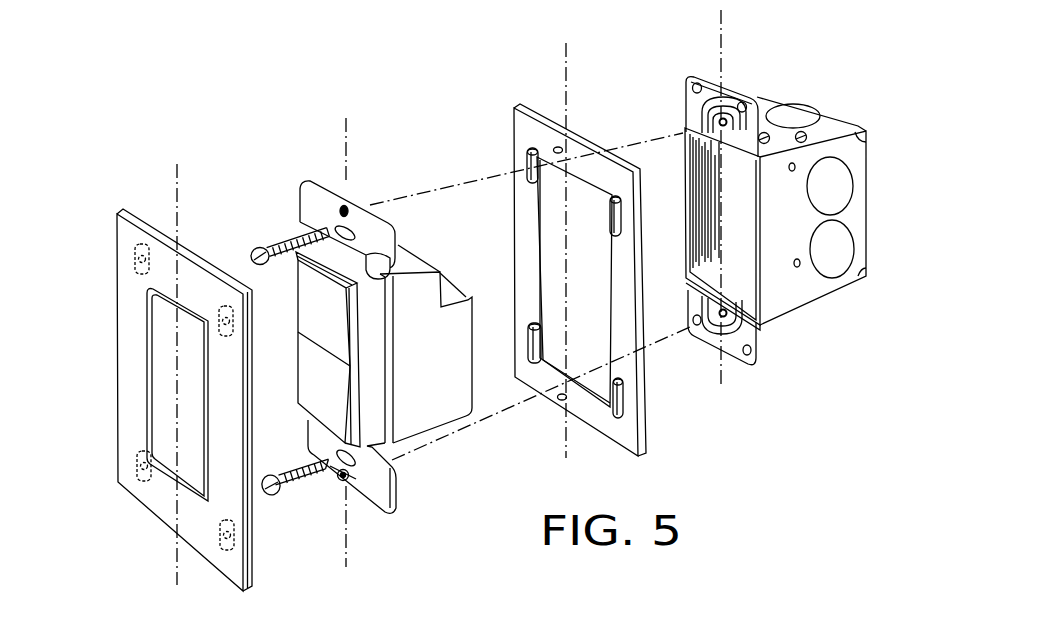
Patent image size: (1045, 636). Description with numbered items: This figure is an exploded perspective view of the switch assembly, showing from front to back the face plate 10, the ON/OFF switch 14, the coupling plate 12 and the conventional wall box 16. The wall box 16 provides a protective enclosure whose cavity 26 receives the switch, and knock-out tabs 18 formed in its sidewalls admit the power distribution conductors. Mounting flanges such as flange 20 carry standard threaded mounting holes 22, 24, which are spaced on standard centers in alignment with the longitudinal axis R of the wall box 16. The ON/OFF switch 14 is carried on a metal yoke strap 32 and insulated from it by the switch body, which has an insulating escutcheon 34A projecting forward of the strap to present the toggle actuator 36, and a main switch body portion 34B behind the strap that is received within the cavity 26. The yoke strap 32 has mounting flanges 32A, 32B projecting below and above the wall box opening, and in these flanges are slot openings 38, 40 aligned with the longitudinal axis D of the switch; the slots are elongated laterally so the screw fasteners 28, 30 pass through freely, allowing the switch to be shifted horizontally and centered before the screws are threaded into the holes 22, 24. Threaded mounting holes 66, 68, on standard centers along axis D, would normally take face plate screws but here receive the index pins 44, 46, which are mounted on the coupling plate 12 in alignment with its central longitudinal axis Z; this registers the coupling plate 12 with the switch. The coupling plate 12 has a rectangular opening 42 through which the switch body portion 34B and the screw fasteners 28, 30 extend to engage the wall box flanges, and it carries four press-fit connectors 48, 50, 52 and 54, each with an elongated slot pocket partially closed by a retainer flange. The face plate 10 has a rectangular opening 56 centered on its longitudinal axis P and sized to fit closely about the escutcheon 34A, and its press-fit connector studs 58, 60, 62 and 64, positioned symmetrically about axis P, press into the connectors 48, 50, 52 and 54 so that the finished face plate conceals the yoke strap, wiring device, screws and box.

The face plate 10 is at (115, 238).
The coupling plate 12 is at (521, 131).
The ON/OFF switch 14 is at (290, 221).
The wall box 16 is at (828, 119).
The knock-out tabs 18 is at (833, 192).
The mounting flange 20 is at (690, 121).
The threaded mounting hole 22 is at (696, 301).
The threaded mounting hole 24 is at (727, 108).
The wall box cavity 26 is at (743, 196).
The threaded screw fastener 28 is at (283, 494).
The threaded screw fastener 30 is at (292, 258).
The yoke strap 32 is at (403, 499).
The mounting flange 32A is at (384, 494).
The mounting flange 32B is at (315, 203).
The insulating escutcheon 34A is at (373, 380).
The main switch body portion 34B is at (412, 296).
The toggle actuator 36 is at (304, 336).
The slot opening 38 is at (308, 432).
The slot opening 40 is at (400, 251).
The rectangular opening 42 is at (585, 292).
The index pin 44 is at (560, 402).
The index pin 46 is at (558, 147).
The press-fit connector 48 is at (624, 397).
The press-fit connector 50 is at (528, 334).
The press-fit connector 52 is at (539, 160).
The press-fit connector 54 is at (622, 213).
The rectangular opening 56 is at (190, 402).
The press-fit connector stud 58 is at (227, 551).
The press-fit connector stud 60 is at (136, 467).
The press-fit connector stud 62 is at (134, 259).
The press-fit connector stud 64 is at (220, 309).
The threaded mounting hole 66 is at (342, 481).
The threaded mounting hole 68 is at (346, 205).
The longitudinal axis of the face plate P is at (177, 173).
The longitudinal axis of the switch D is at (346, 130).
The central longitudinal axis of the coupling plate Z is at (566, 67).
The longitudinal axis of the wall box R is at (720, 30).